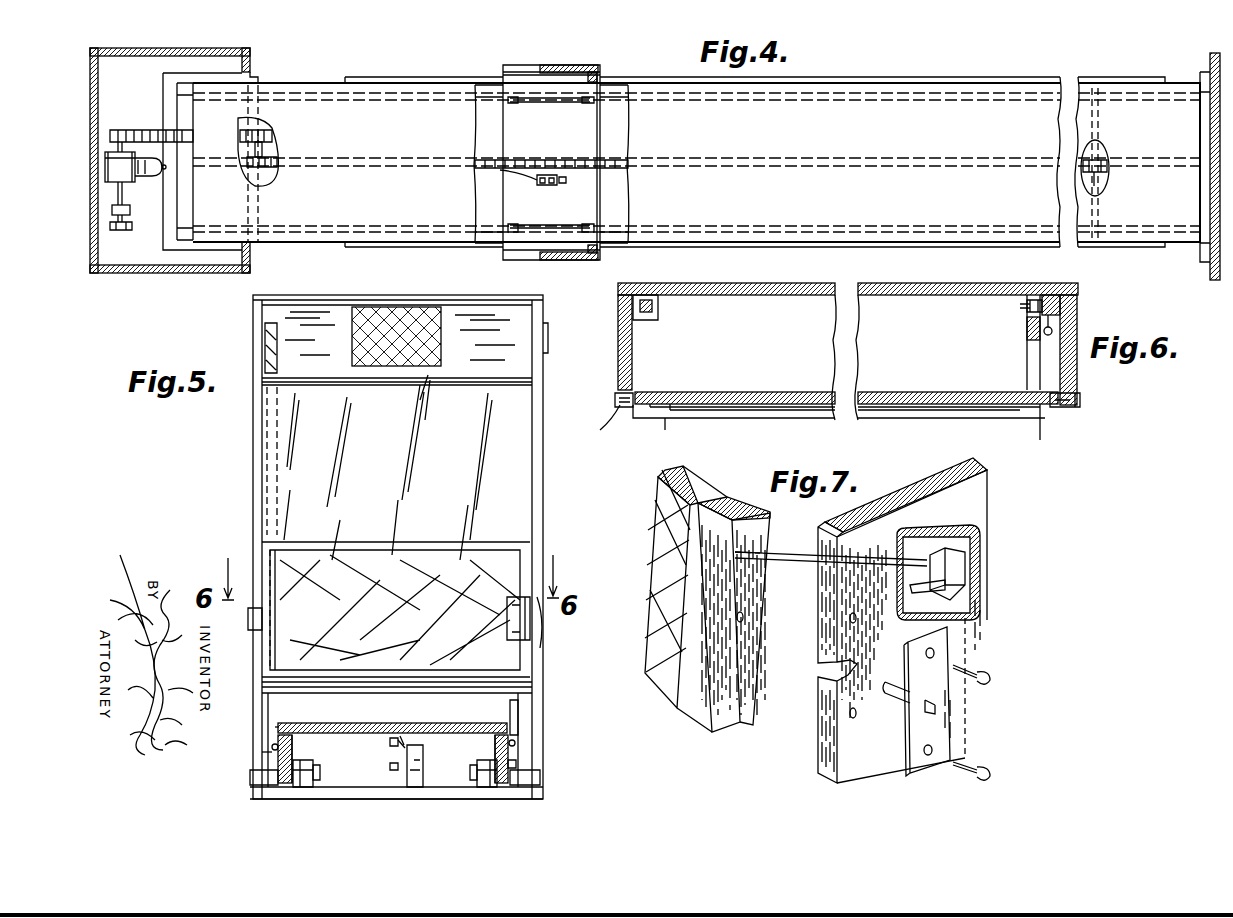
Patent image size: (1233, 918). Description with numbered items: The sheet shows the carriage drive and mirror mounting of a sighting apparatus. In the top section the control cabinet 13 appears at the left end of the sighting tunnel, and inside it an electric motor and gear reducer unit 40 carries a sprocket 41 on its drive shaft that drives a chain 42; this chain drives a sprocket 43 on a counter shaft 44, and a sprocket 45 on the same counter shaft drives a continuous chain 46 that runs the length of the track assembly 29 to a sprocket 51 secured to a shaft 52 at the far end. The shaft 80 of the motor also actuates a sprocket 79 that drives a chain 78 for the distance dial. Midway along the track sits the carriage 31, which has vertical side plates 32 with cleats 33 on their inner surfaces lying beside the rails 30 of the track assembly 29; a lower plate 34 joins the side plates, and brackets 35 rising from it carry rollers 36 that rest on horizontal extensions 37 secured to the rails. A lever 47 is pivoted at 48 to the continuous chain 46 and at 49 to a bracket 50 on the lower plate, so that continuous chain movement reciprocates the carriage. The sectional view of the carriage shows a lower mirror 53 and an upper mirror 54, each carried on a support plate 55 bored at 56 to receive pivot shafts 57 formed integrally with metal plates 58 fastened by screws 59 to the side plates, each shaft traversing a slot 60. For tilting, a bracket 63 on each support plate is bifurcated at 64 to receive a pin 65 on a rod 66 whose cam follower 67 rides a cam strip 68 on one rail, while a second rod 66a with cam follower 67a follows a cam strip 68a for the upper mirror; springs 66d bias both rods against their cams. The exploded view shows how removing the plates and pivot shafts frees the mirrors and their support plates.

In FIG. 4, the control cabinet 13 is at (152, 270).
In FIG. 4, the track channel 29 is at (722, 148).
In FIG. 5, the track channel 29 is at (383, 723).
In FIG. 4, the rails 30 is at (612, 88).
In FIG. 5, the rails 30 is at (294, 745).
In FIG. 4, the carriage 31 is at (520, 58).
In FIG. 5, the carriage 31 is at (548, 493).
In FIG. 6, the carriage 31 is at (1086, 383).
In FIG. 4, the side plates 32 is at (552, 65).
In FIG. 5, the side plates 32 is at (255, 655).
In FIG. 6, the side plates 32 is at (634, 342).
In FIG. 7, the side plates 32 is at (988, 487).
In FIG. 5, the cleats 33 is at (250, 775).
In FIG. 4, the lower plate 34 is at (592, 137).
In FIG. 5, the lower plate 34 is at (540, 797).
In FIG. 6, the lower plate 34 is at (945, 300).
In FIG. 4, the brackets 35 is at (580, 103).
In FIG. 5, the brackets 35 is at (318, 770).
In FIG. 4, the rollers 36 is at (513, 103).
In FIG. 5, the rollers 36 is at (292, 760).
In FIG. 4, the horizontal extensions 37 is at (490, 102).
In FIG. 5, the horizontal extensions 37 is at (295, 785).
In FIG. 4, the electric motor and gear reducer unit 40 is at (120, 150).
In FIG. 4, the sprocket 41 is at (101, 138).
In FIG. 4, the chain 42 is at (140, 158).
In FIG. 4, the sprocket 43 is at (275, 136).
In FIG. 4, the counter shaft 44 is at (262, 94).
In FIG. 4, the sprocket 45 is at (246, 162).
In FIG. 4, the continuous chain 46 is at (362, 158).
In FIG. 5, the continuous chain 46 is at (388, 742).
In FIG. 4, the lever 47 is at (512, 176).
In FIG. 5, the lever 47 is at (388, 768).
In FIG. 4, the pivot 48 is at (475, 170).
In FIG. 4, the pivot 49 is at (547, 186).
In FIG. 5, the pivot 49 is at (424, 765).
In FIG. 4, the bracket 50 is at (567, 179).
In FIG. 5, the bracket 50 is at (407, 772).
In FIG. 4, the sprocket 51 is at (1108, 166).
In FIG. 4, the shaft 52 is at (1097, 180).
In FIG. 5, the lower mirror 53 is at (408, 600).
In FIG. 6, the lower mirror 53 is at (665, 420).
In FIG. 5, the upper mirror 54 is at (443, 344).
In FIG. 5, the support plate 55 is at (453, 375).
In FIG. 6, the support plate 55 is at (718, 392).
In FIG. 7, the support plate 55 is at (728, 720).
In FIG. 7, the bore 56 is at (745, 620).
In FIG. 5, the pivot shafts 57 is at (545, 352).
In FIG. 6, the pivot shafts 57 is at (615, 402).
In FIG. 7, the pivot shafts 57 is at (900, 700).
In FIG. 5, the metal plates 58 is at (550, 330).
In FIG. 6, the metal plates 58 is at (615, 395).
In FIG. 7, the metal plates 58 is at (950, 738).
In FIG. 7, the screws 59 is at (992, 675).
In FIG. 5, the slot 60 is at (250, 625).
In FIG. 6, the slot 60 is at (625, 408).
In FIG. 7, the slot 60 is at (818, 676).
In FIG. 6, the bracket 63 is at (1027, 370).
In FIG. 7, the bracket 63 is at (780, 550).
In FIG. 6, the bifurcated portion 64 is at (1033, 298).
In FIG. 7, the bifurcated portion 64 is at (918, 560).
In FIG. 6, the pin 65 is at (1020, 306).
In FIG. 7, the pin 65 is at (950, 592).
In FIG. 4, the rod 66 is at (594, 262).
In FIG. 5, the rod 66 is at (518, 710).
In FIG. 6, the rod 66 is at (1062, 306).
In FIG. 7, the rod 66 is at (975, 555).
In FIG. 4, the rod 66a is at (591, 72).
In FIG. 5, the rod 66a is at (273, 744).
In FIG. 6, the rod 66a is at (658, 312).
In FIG. 6, the springs 66d is at (1053, 331).
In FIG. 4, the cam follower 67 is at (590, 254).
In FIG. 5, the cam follower 67 is at (515, 743).
In FIG. 5, the cam follower 67a is at (278, 727).
In FIG. 4, the cam strip 68 is at (650, 248).
In FIG. 5, the cam strip 68 is at (516, 764).
In FIG. 4, the cam strip 68a is at (650, 83).
In FIG. 5, the cam strip 68a is at (265, 750).
In FIG. 4, the chain 78 is at (115, 225).
In FIG. 4, the sprocket 79 is at (132, 228).
In FIG. 4, the shaft 80 is at (124, 192).